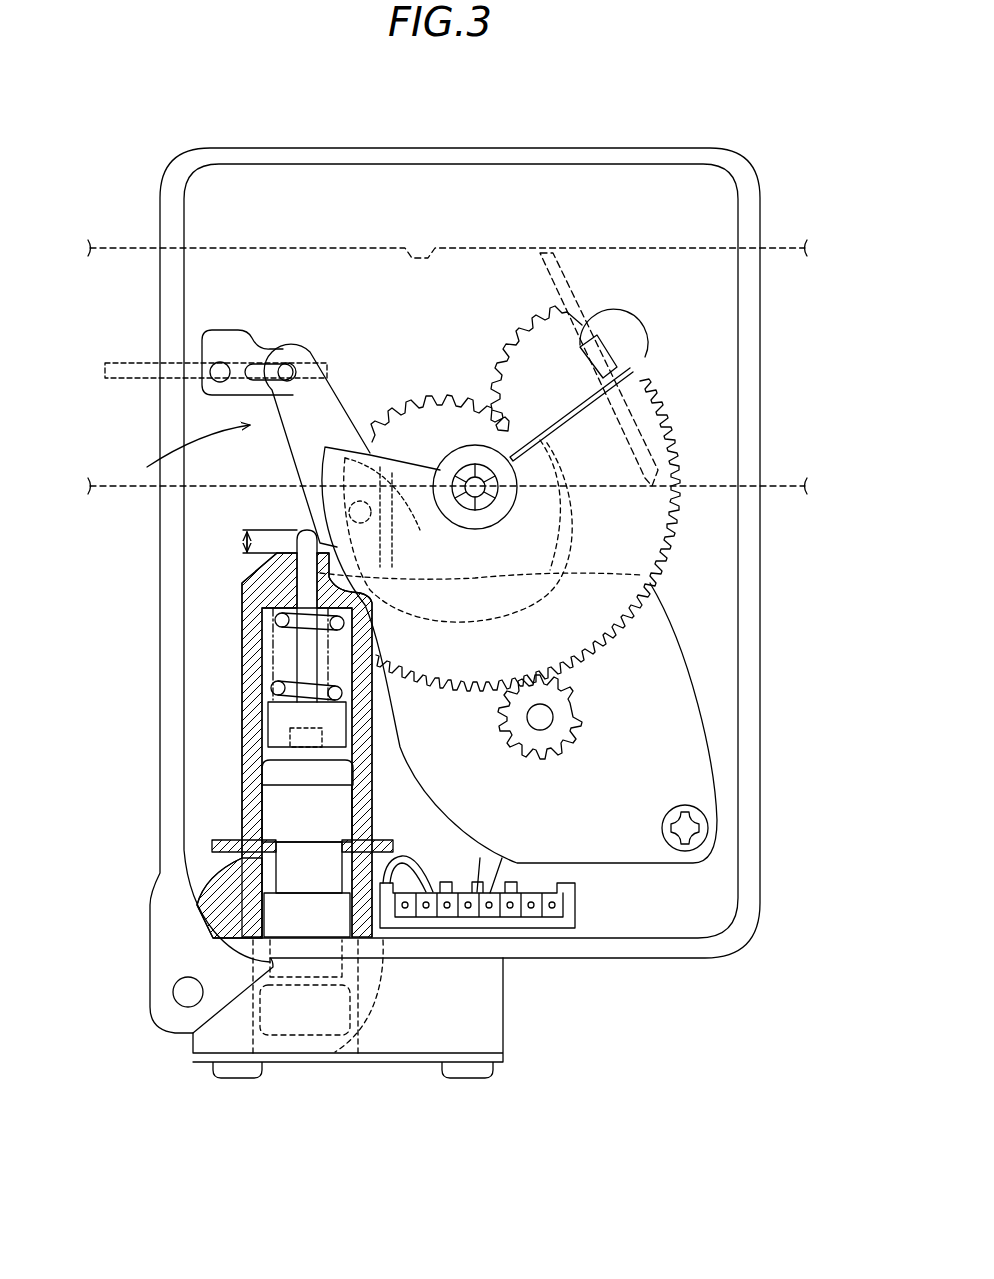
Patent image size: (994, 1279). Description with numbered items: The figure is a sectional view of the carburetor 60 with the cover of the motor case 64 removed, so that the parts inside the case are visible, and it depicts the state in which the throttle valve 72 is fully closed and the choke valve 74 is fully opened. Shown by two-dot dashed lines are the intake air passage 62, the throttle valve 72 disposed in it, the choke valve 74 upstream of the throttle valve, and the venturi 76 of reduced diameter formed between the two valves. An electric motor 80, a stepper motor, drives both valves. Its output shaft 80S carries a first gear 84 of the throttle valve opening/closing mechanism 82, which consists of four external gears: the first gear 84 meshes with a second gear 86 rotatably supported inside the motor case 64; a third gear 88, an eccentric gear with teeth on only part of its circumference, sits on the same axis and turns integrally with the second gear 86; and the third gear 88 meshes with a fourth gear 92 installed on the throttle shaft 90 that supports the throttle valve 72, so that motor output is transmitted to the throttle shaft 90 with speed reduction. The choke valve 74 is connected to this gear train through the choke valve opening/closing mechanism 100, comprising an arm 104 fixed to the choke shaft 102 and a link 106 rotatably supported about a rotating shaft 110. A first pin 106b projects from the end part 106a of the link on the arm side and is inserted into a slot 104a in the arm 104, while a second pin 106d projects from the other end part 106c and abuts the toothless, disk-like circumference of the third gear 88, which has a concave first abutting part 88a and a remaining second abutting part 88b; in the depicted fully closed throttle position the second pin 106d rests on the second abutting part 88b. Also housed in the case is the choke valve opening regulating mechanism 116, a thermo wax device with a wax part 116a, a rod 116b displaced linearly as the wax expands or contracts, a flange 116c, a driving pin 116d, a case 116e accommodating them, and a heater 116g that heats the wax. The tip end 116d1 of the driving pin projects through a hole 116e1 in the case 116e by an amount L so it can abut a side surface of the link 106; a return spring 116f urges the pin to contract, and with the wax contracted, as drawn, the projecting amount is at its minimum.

The carburetor 60 is at (729, 147).
The intake air passage 62 is at (762, 248).
The motor case 64 is at (760, 834).
The throttle valve 72 is at (570, 277).
The choke valve 74 is at (148, 362).
The venturi 76 is at (418, 246).
The electric motor 80 is at (680, 757).
The output shaft 80S is at (533, 717).
The throttle valve opening/closing mechanism 82 is at (710, 525).
The first gear 84 is at (517, 748).
The second gear 86 is at (630, 582).
The third gear 88 is at (422, 425).
The first abutting part 88a is at (640, 575).
The second abutting part 88b is at (465, 620).
The throttle shaft 90 is at (597, 355).
The fourth gear 92 is at (625, 345).
The choke valve opening/closing mechanism 100 is at (174, 454).
The choke shaft 102 is at (220, 372).
The arm 104 is at (212, 340).
The slot 104a is at (262, 381).
The link 106 is at (342, 408).
The end part 106a is at (298, 360).
The first pin 106b is at (281, 368).
The end part 106c is at (380, 560).
The second pin 106d is at (378, 537).
The rotating shaft 110 is at (456, 487).
The choke valve opening regulating mechanism 116 is at (247, 653).
The wax part 116a is at (283, 815).
The rod 116b is at (293, 750).
The flange 116c is at (290, 717).
The driving pin 116d is at (300, 635).
The tip end 116d1 is at (305, 531).
The case 116e is at (293, 457).
The hole 116e1 is at (288, 568).
The return spring 116f is at (280, 688).
The heater 116g is at (283, 873).